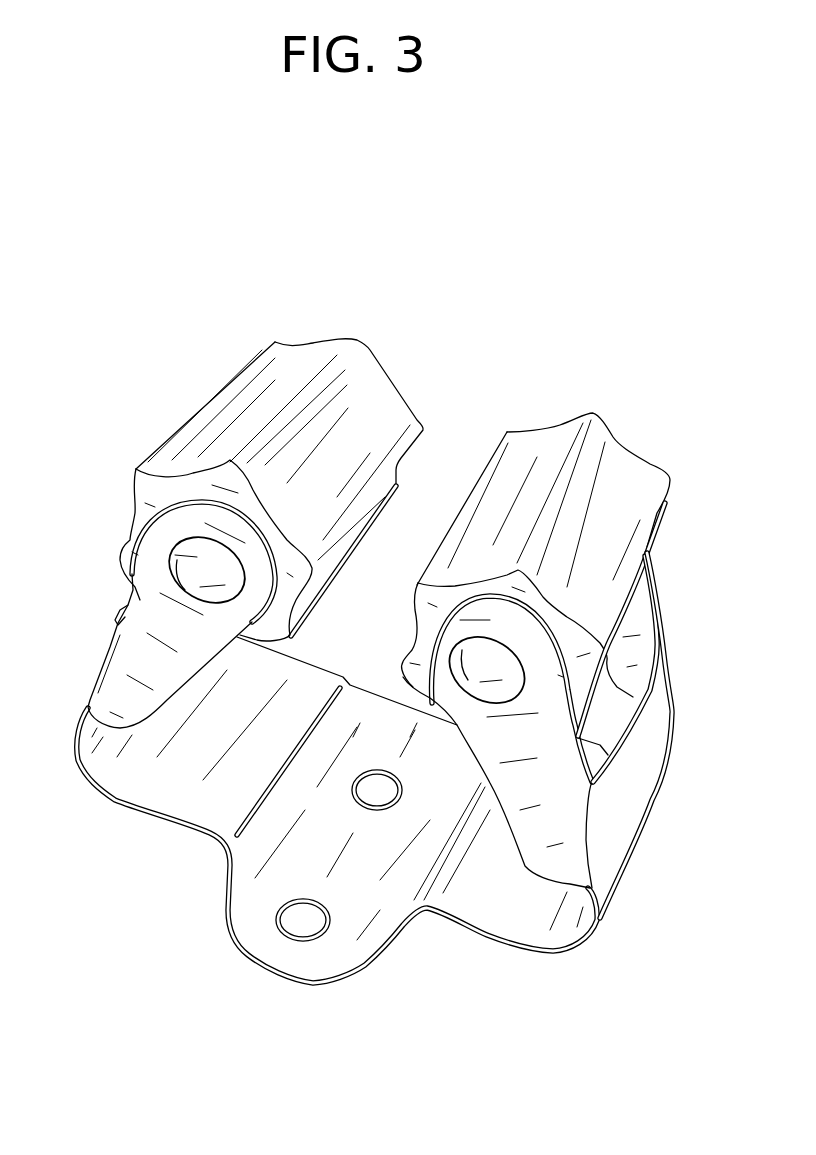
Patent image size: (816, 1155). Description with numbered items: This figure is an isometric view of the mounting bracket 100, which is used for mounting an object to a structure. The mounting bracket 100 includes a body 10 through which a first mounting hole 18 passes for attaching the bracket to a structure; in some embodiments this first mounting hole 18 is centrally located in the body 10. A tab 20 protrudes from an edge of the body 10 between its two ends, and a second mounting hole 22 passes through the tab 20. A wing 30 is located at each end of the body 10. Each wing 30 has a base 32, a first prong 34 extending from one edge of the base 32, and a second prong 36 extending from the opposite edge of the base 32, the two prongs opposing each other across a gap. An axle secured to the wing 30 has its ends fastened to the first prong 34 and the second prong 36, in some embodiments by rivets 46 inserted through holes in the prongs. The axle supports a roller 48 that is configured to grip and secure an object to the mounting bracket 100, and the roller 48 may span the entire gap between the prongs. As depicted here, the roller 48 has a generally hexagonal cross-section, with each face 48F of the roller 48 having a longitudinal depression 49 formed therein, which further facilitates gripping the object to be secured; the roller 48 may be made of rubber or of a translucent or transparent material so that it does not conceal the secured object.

The mounting bracket 100 is at (128, 263).
The body 10 is at (173, 843).
The first mounting hole 18 is at (380, 797).
The tab 20 is at (253, 937).
The second mounting hole 22 is at (302, 920).
The wing 30 is at (638, 853).
The base 32 is at (633, 762).
The first prong 34 is at (652, 590).
The second prong 36 is at (535, 830).
The rivet 46 is at (197, 555).
The roller 48 is at (195, 417).
The face 48F is at (313, 357).
The longitudinal depression 49 is at (275, 375).